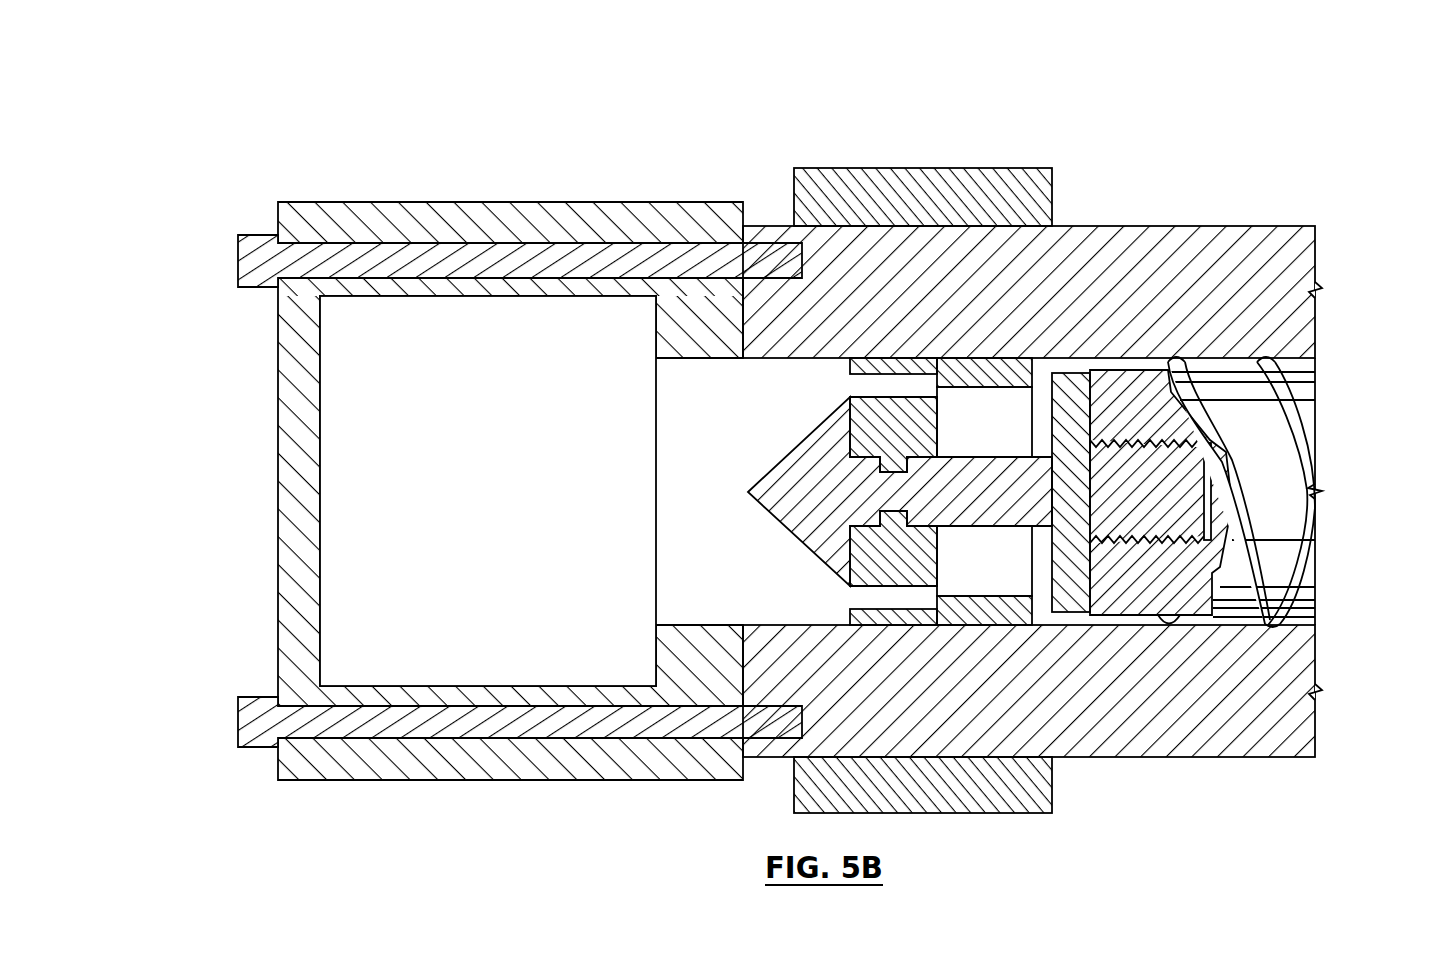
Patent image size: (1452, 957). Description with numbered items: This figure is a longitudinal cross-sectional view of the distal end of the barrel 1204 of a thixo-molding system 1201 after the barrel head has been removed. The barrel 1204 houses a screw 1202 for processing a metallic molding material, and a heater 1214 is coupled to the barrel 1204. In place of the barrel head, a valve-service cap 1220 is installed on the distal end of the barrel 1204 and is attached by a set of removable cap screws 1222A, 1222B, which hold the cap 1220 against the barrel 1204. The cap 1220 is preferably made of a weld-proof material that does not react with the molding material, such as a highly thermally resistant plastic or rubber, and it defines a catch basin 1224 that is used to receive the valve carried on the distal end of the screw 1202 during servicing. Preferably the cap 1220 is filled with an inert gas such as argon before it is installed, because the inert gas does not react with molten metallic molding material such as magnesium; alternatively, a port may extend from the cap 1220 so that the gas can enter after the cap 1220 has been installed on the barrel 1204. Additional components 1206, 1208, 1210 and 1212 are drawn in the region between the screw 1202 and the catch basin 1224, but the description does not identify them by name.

The thixo-molding system 1201 is at (1310, 127).
The screw 1202 is at (1305, 392).
The barrel 1204 is at (1173, 263).
The center pin 1206 is at (1012, 503).
The nut 1208 is at (1071, 392).
The collar 1210 is at (868, 357).
The insulator ring 1212 is at (1000, 372).
The heater 1214 is at (962, 177).
The valve-service cap 1220 is at (572, 220).
The removal cap screw 1222A is at (240, 251).
The removal cap screw 1222B is at (238, 711).
The catch basin 1224 is at (375, 468).